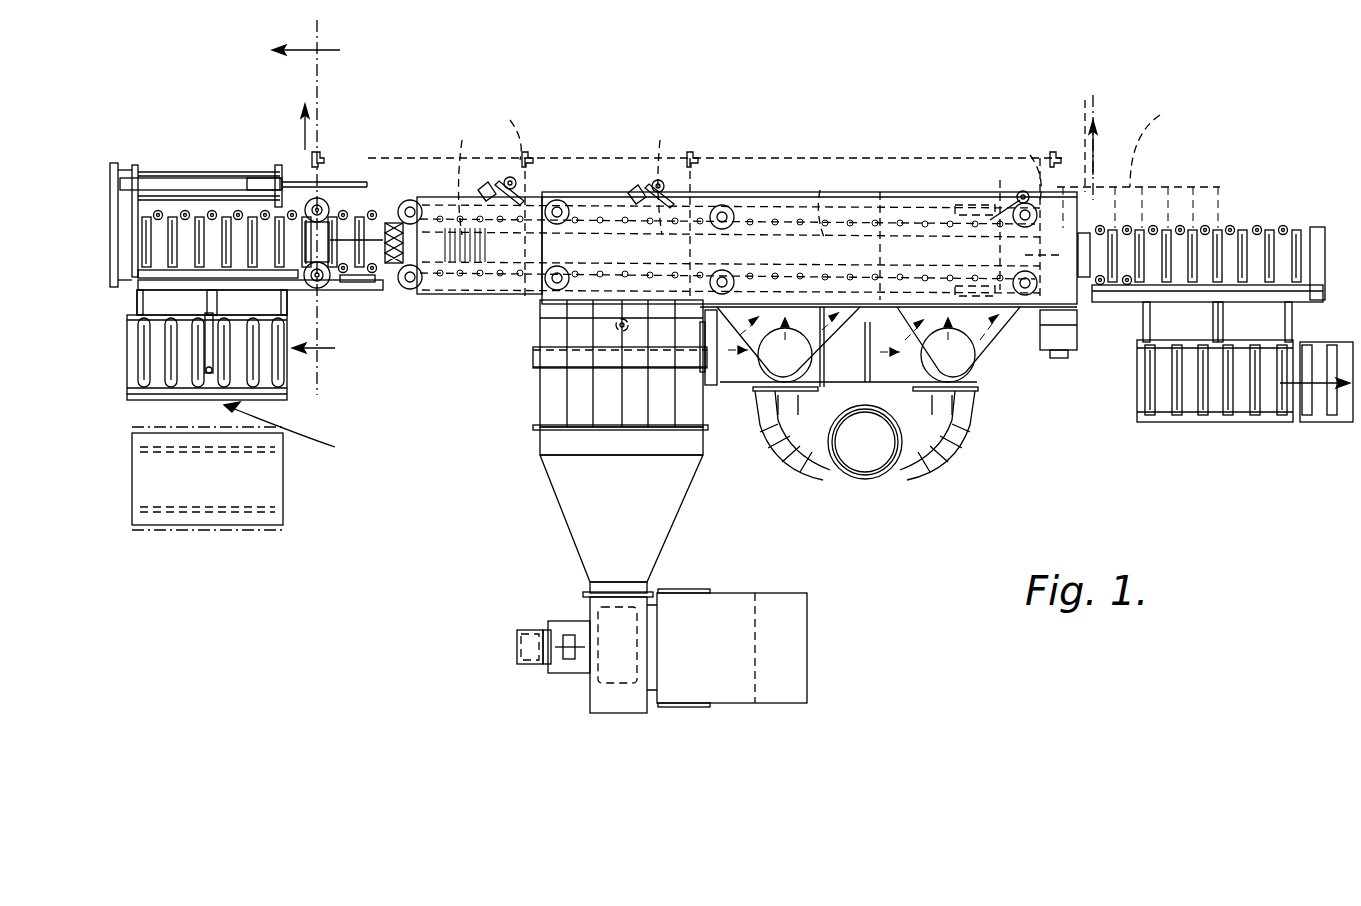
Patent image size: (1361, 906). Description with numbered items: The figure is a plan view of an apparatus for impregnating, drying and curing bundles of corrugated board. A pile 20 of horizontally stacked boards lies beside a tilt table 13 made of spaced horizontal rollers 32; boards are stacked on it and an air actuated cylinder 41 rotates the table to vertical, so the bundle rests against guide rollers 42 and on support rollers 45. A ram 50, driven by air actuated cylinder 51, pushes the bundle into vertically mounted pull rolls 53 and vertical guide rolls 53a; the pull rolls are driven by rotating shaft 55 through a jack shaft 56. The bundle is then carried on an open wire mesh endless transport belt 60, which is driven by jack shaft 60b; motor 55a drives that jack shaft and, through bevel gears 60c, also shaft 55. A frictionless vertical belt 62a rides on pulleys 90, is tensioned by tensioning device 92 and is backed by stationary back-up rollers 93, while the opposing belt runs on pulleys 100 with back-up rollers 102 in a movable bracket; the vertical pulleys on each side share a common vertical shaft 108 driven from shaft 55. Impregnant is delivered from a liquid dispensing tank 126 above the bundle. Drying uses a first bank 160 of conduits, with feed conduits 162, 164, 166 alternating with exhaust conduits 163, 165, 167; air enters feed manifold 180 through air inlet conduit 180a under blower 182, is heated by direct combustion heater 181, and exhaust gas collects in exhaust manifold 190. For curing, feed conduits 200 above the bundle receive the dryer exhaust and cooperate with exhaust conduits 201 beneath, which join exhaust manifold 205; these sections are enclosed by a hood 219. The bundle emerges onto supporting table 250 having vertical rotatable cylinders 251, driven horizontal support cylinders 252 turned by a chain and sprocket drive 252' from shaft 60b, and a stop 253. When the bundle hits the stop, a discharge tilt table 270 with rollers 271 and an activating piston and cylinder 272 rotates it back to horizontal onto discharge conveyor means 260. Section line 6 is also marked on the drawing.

The section line 6- 6 is at (693, 144).
The tilt table 13 is at (286, 238).
The pile 20 is at (283, 487).
The rollers 32 is at (272, 385).
The air actuated cylinder 41 is at (215, 345).
The guide rollers 42 is at (160, 210).
The support rollers 45 is at (222, 215).
The ram 50 is at (125, 180).
The air actuated cylinder 51 is at (262, 178).
The pull rolls 53 is at (325, 205).
The vertical guide rolls 53a is at (345, 212).
The rotating shaft 55 is at (420, 165).
The motor 55a is at (1068, 336).
The jack shaft 56 is at (322, 160).
The endless transport belt 60 is at (395, 330).
The jack shaft 60b is at (1083, 140).
The bevel gears 60c is at (314, 155).
The frictionless vertical belt 62a is at (838, 188).
The pulleys 90 is at (412, 200).
The tensioning device 92 is at (492, 178).
The back-up rollers 93 is at (455, 205).
The pulleys 100 is at (428, 288).
The back-up rollers 102 is at (466, 300).
The vertical shaft 108 is at (1092, 314).
The liquid dispensing tank 126 is at (488, 253).
The first bank of conduits 160 is at (536, 389).
The feed conduit 162 is at (552, 312).
The exhaust conduit 163 is at (578, 322).
The feed conduit 164 is at (600, 335).
The exhaust conduit 165 is at (625, 355).
The feed conduit 166 is at (650, 410).
The exhaust conduit 167 is at (675, 422).
The feed manifold 180 is at (575, 495).
The air inlet conduit 180a is at (808, 660).
The direct combustion heater 181 is at (722, 692).
The blower 182 is at (607, 713).
The exhaust manifold 190 is at (735, 387).
The feed conduits 200 is at (840, 332).
The exhaust conduits 201 is at (788, 468).
The exhaust manifold 205 is at (893, 472).
The hood 219 is at (900, 200).
The supporting table 250 is at (1271, 222).
The vertically mounted rotatable cylinders 251 is at (1240, 226).
The support cylinders 252 is at (1204, 209).
The chain and sprocket drive 252' is at (1155, 141).
The stop 253 is at (1312, 232).
The discharge conveyor means 260 is at (1337, 425).
The tilt table 270 is at (1204, 423).
The rollers 271 is at (1150, 378).
The activating piston and cylinder 272 is at (1212, 322).